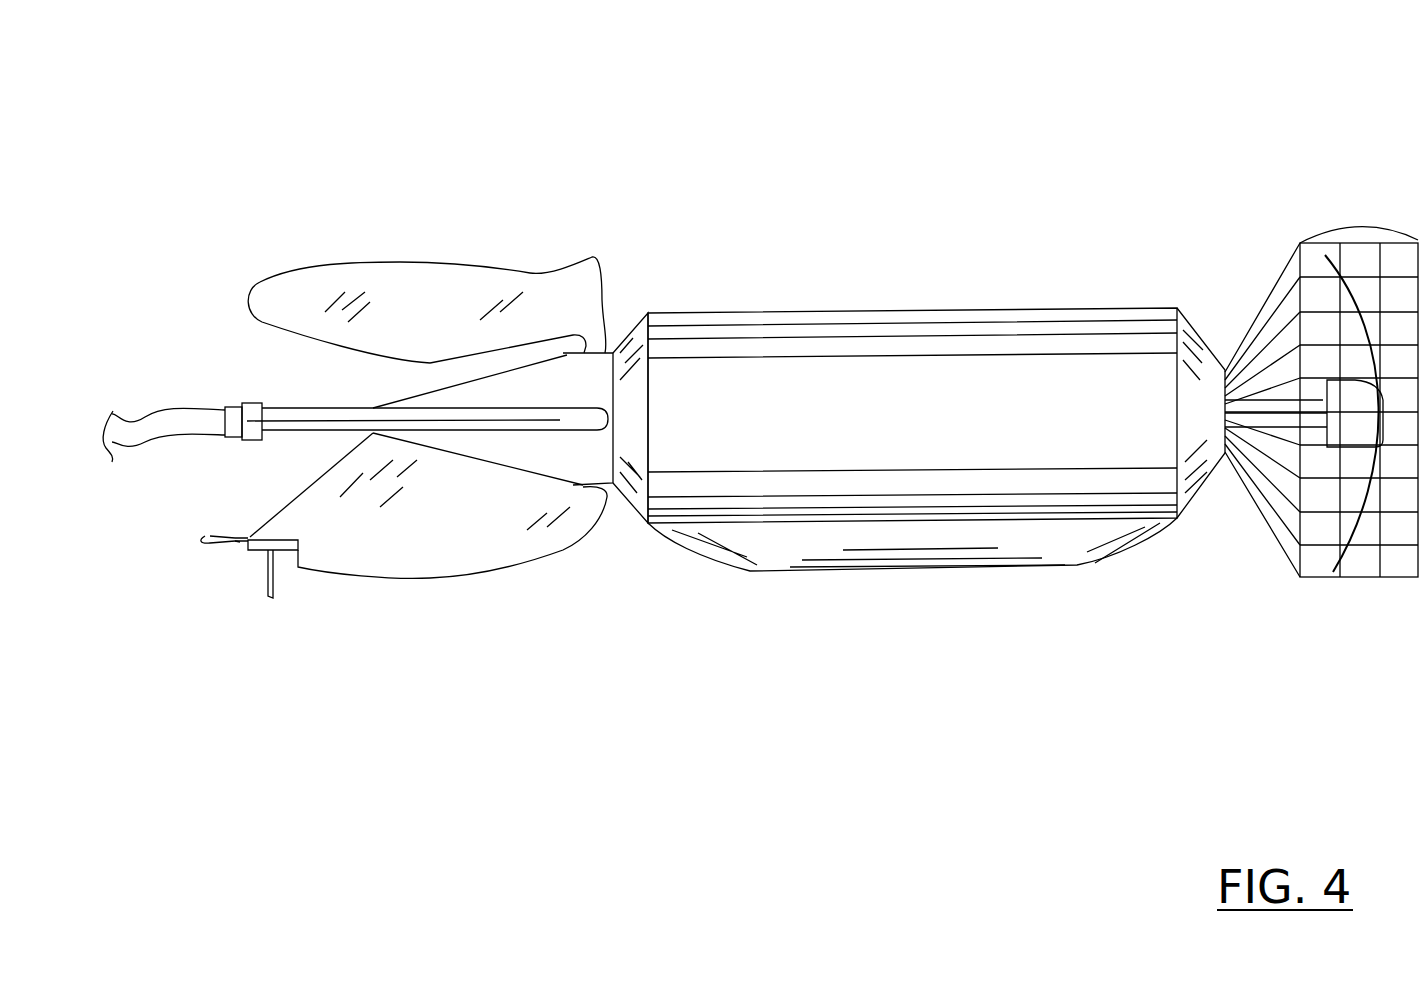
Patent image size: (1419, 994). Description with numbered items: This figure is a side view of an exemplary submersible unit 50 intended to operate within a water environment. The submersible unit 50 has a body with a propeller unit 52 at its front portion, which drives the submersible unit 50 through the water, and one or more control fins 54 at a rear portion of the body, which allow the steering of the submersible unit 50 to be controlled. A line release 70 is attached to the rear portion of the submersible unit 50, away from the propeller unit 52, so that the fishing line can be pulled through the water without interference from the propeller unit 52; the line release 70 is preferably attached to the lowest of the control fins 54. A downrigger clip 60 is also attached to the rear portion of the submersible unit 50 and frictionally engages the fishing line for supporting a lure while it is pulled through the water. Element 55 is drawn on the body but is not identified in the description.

The submersible unit 50 is at (895, 295).
The propeller unit 52 is at (1330, 257).
The control fins 54 is at (553, 420).
The skirt 55 is at (1080, 565).
The downrigger clip 60 is at (205, 543).
The line release 70 is at (270, 597).